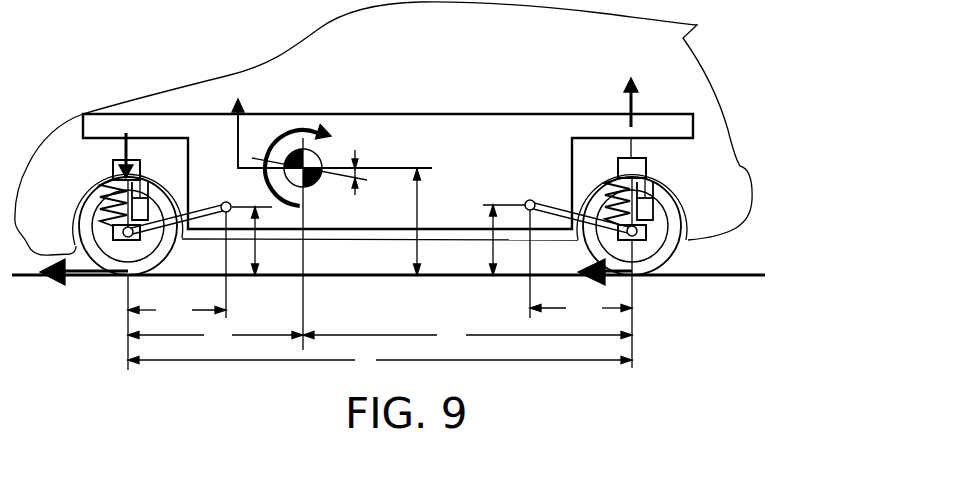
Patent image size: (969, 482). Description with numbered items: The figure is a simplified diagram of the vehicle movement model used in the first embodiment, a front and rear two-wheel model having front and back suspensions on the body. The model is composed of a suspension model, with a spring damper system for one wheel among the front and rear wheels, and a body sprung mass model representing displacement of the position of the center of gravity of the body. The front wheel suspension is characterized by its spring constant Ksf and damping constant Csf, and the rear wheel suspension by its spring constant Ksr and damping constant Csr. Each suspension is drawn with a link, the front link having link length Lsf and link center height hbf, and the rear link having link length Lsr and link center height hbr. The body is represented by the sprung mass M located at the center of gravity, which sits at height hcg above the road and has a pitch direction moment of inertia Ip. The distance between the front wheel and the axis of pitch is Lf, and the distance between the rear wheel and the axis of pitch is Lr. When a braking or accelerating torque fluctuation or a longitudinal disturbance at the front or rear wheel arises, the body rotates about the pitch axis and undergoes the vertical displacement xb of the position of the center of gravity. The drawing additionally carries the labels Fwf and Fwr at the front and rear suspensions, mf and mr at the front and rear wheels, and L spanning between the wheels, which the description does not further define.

The front wheel load variation Fwf is at (122, 151).
The rear wheel load variation Fwr is at (628, 100).
The spring constant of the front wheel suspension Ksf is at (107, 198).
The spring constant of the rear wheel suspension Ksr is at (617, 183).
The damping constant of the front wheel suspension Csf is at (142, 198).
The damping constant of the rear wheel suspension Csr is at (648, 193).
The front unsprung mass mf is at (155, 226).
The rear unsprung mass mr is at (603, 226).
The vertical displacement of the position of the center of gravity xb is at (240, 123).
The sprung mass M is at (304, 184).
The pitch direction moment of inertia of the body Ip is at (310, 187).
The height of the center of gravity hcg is at (427, 198).
The link center height of the front wheel suspension hbf is at (256, 244).
The link center height of the rear wheel suspension hbr is at (492, 246).
The link length of the front wheel suspension Lsf is at (177, 310).
The link length of the rear wheel suspension Lsr is at (581, 309).
The distance between the front wheel and the axis of pitch Lf is at (215, 336).
The distance between the rear wheel and the axis of pitch Lr is at (467, 336).
The wheelbase L is at (380, 361).